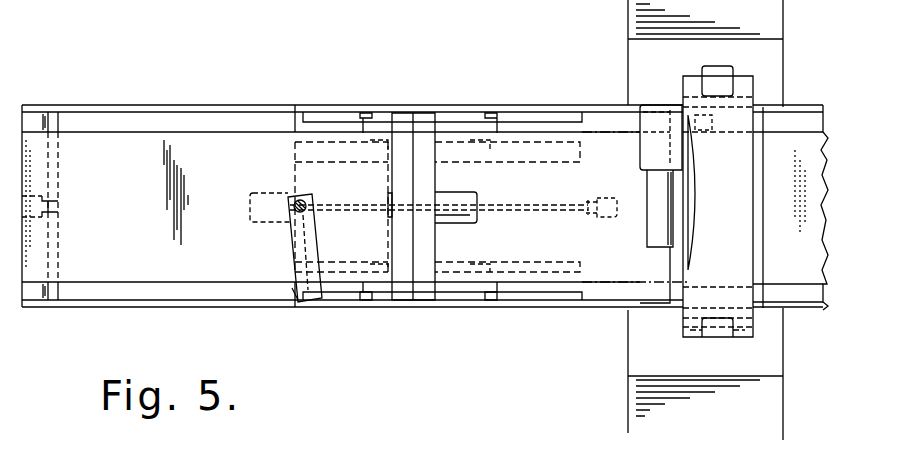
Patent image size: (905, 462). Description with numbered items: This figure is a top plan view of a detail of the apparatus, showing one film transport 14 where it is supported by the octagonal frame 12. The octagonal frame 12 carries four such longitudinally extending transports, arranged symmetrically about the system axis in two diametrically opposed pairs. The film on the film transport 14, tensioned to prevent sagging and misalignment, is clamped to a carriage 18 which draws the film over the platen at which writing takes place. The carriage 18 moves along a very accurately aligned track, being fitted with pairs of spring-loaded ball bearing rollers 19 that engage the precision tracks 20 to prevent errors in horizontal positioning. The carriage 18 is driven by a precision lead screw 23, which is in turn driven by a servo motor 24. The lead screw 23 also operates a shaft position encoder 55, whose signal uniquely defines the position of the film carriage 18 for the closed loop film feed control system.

The octagonal frame 12 is at (628, 353).
The film transport 14 is at (238, 304).
The carriage 18 is at (400, 300).
The spring-loaded ball bearing rollers 19 is at (488, 300).
The precision tracks 20 is at (337, 298).
The precision lead screw 23 is at (505, 210).
The servo motor 24 is at (252, 210).
The shaft position encoder 55 is at (603, 215).